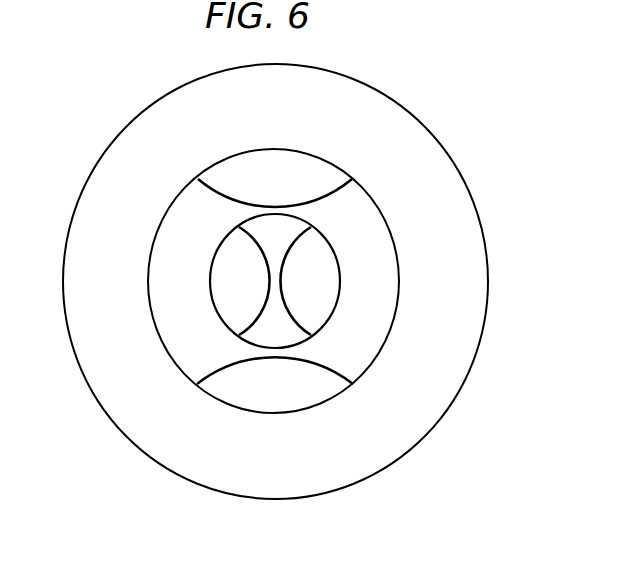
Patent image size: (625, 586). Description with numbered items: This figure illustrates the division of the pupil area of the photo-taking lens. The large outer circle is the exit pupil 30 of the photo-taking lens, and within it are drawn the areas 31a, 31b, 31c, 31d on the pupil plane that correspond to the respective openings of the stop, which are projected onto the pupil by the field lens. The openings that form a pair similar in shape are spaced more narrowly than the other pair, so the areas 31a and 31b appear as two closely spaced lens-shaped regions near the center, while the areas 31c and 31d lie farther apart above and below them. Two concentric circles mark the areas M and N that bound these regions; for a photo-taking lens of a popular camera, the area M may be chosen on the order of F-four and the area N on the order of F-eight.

The exit pupil of the photo-taking lens 30 is at (488, 310).
The pupil area M is at (397, 237).
The pupil area N is at (302, 218).
The area on the pupil plane 31a is at (338, 291).
The area on the pupil plane 31b is at (210, 278).
The area on the pupil plane 31c is at (320, 155).
The area on the pupil plane 31d is at (335, 371).